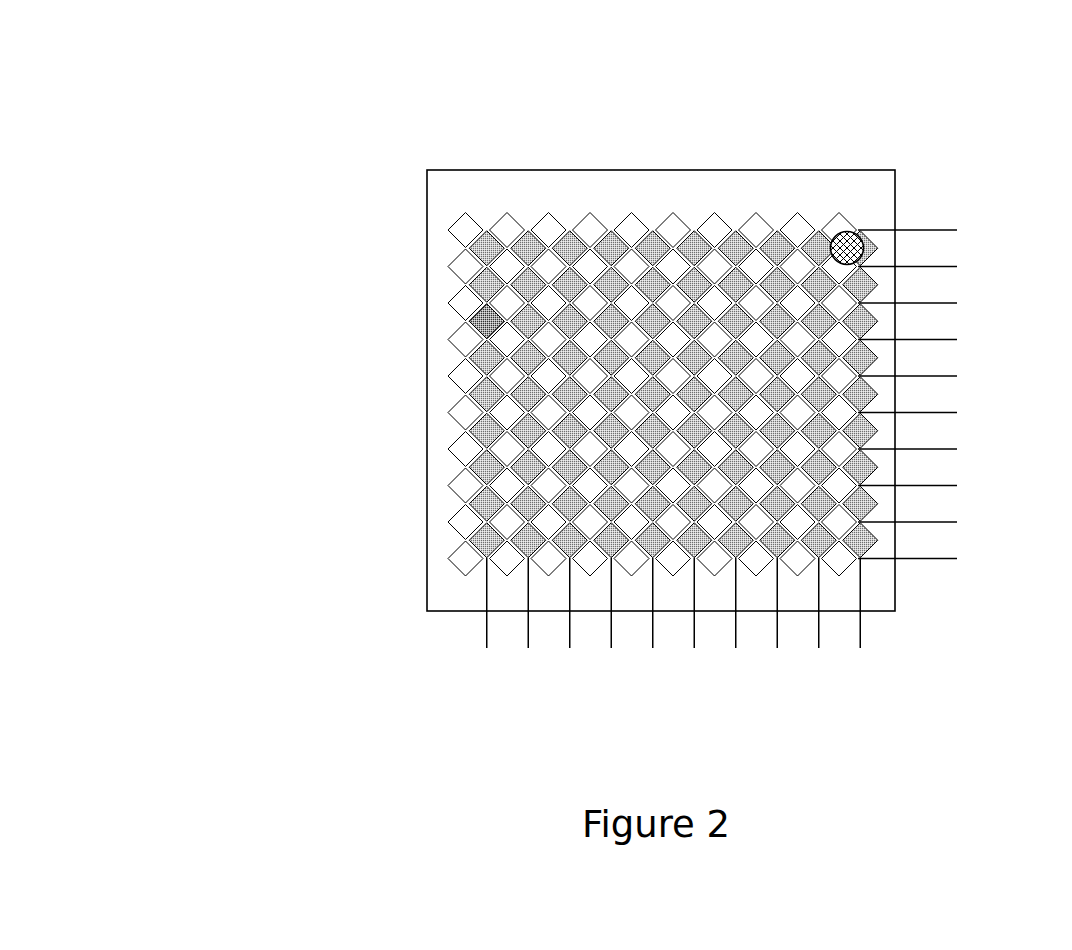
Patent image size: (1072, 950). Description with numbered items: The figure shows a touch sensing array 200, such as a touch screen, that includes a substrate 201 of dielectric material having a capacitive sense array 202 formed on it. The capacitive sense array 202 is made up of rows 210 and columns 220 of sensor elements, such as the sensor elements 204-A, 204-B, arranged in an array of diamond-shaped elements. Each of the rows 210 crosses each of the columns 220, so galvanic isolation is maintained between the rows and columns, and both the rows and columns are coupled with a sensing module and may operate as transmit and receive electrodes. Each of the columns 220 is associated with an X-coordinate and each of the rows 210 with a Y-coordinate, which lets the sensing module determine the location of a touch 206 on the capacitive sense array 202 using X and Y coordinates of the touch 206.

The touch sensing array 200 is at (196, 85).
The substrate 201 is at (427, 182).
The capacitive sense array 202 is at (708, 200).
The sensor element 204-A is at (450, 302).
The sensor element 204-B is at (470, 322).
The touch 206 is at (860, 234).
The rows R0-R9 210 is at (1016, 357).
The columns C0-C9 220 is at (692, 702).